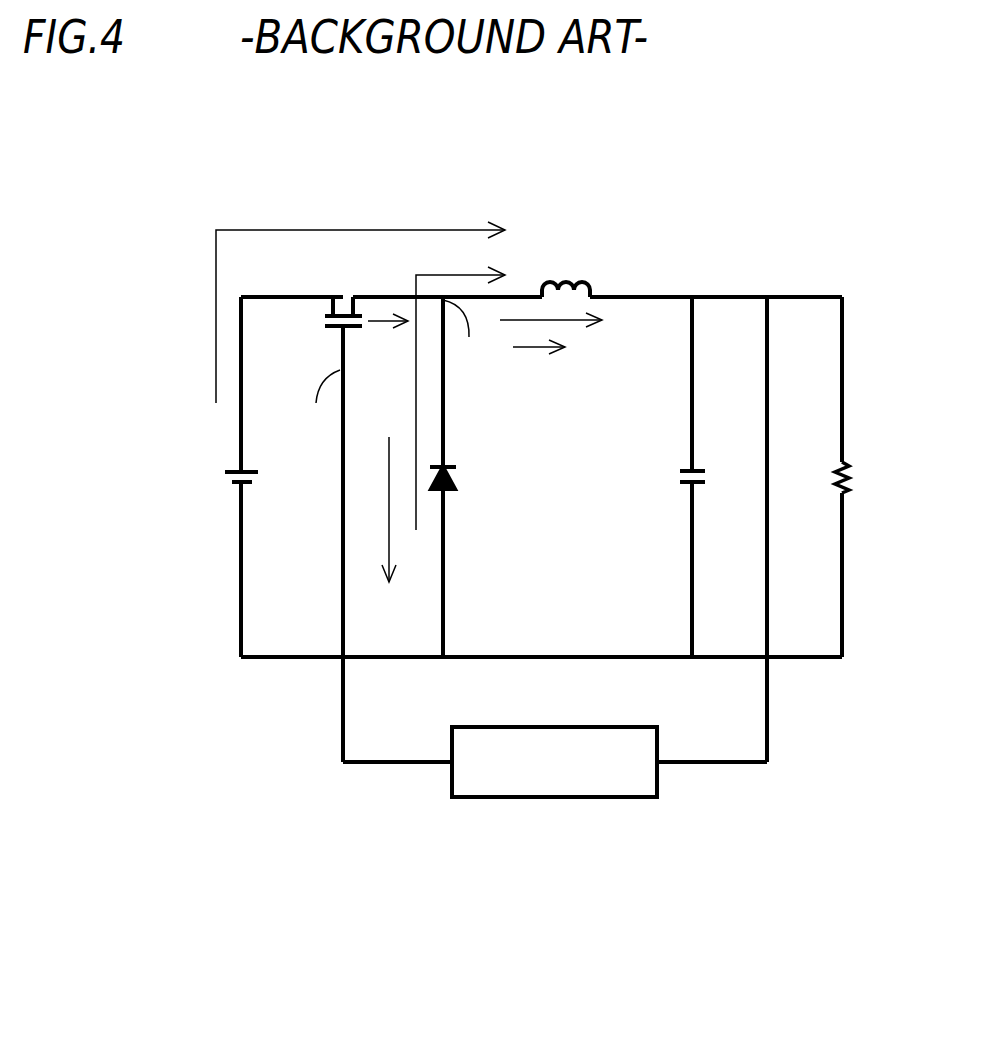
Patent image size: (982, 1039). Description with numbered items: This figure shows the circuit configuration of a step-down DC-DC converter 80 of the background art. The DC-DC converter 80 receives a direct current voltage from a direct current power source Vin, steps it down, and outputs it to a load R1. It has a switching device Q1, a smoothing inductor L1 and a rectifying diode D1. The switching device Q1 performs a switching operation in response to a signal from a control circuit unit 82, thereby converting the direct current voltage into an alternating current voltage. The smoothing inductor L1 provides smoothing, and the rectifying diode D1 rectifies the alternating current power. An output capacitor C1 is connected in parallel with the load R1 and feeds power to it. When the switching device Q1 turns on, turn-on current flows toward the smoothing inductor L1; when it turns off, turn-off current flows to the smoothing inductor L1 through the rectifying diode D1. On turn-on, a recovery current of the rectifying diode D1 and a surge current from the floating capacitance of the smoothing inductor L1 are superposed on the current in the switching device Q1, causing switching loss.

The DC-DC converter 80 is at (248, 117).
The control circuit unit 82 is at (550, 800).
The switching device Q1 is at (342, 514).
The rectifying diode D1 is at (461, 477).
The smoothing inductor L1 is at (566, 272).
The output capacitor C1 is at (711, 477).
The load R1 is at (863, 477).
The direct current power source Vin is at (221, 477).